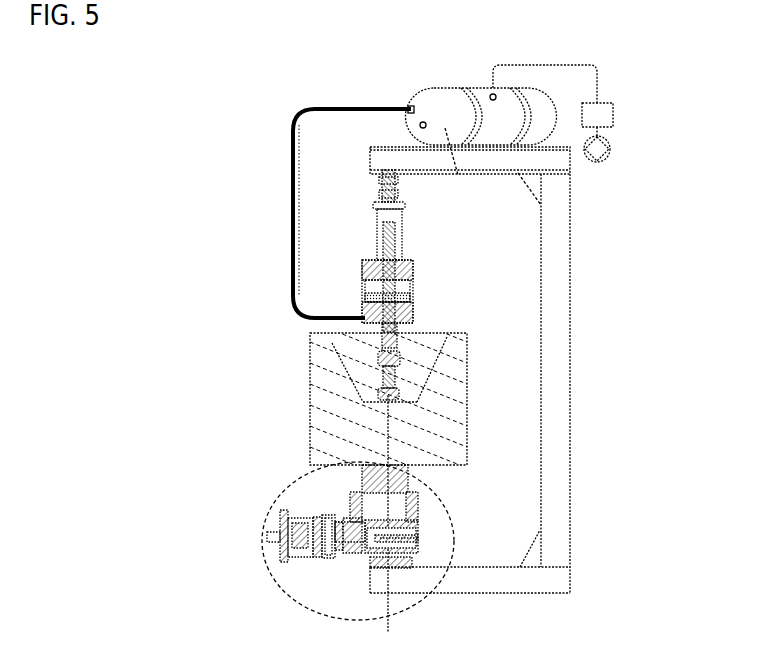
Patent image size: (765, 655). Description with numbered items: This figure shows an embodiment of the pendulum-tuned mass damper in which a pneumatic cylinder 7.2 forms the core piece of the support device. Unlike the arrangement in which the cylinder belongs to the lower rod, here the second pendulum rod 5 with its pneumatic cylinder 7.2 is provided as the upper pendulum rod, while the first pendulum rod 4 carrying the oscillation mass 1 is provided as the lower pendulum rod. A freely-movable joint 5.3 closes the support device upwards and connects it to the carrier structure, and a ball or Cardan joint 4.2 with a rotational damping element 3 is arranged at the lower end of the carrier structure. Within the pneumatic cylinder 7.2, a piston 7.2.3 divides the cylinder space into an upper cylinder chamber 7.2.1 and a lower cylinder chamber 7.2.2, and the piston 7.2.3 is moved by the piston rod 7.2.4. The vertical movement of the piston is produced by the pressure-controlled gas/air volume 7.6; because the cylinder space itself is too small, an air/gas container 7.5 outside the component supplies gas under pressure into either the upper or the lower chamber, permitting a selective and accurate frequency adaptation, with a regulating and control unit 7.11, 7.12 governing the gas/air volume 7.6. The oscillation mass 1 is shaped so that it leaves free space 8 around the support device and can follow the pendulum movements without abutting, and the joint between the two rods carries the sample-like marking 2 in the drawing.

The oscillation mass 1 is at (360, 390).
The sample 2 is at (389, 385).
The rotational damping element 3 is at (272, 497).
The first pendulum rod 4 is at (395, 465).
The ball or Cardan joint 4.2 is at (418, 532).
The second pendulum rod 5 is at (362, 398).
The freely-movable joint 5.3 is at (381, 181).
The pneumatic cylinder 7.2 is at (413, 317).
The upper cylinder chamber 7.2.1 is at (414, 280).
The piston 7.2.3 is at (402, 292).
The lower cylinder chamber 7.2.2 is at (402, 305).
The piston rod 7.2.4 is at (397, 333).
The air/gas container 7.5 is at (416, 90).
The pressure-controlled gas/air volume 7.6 is at (413, 259).
The regulating and control unit 7.11 is at (613, 110).
The regulating and control unit 7.12 is at (600, 153).
The free space 8 is at (365, 357).